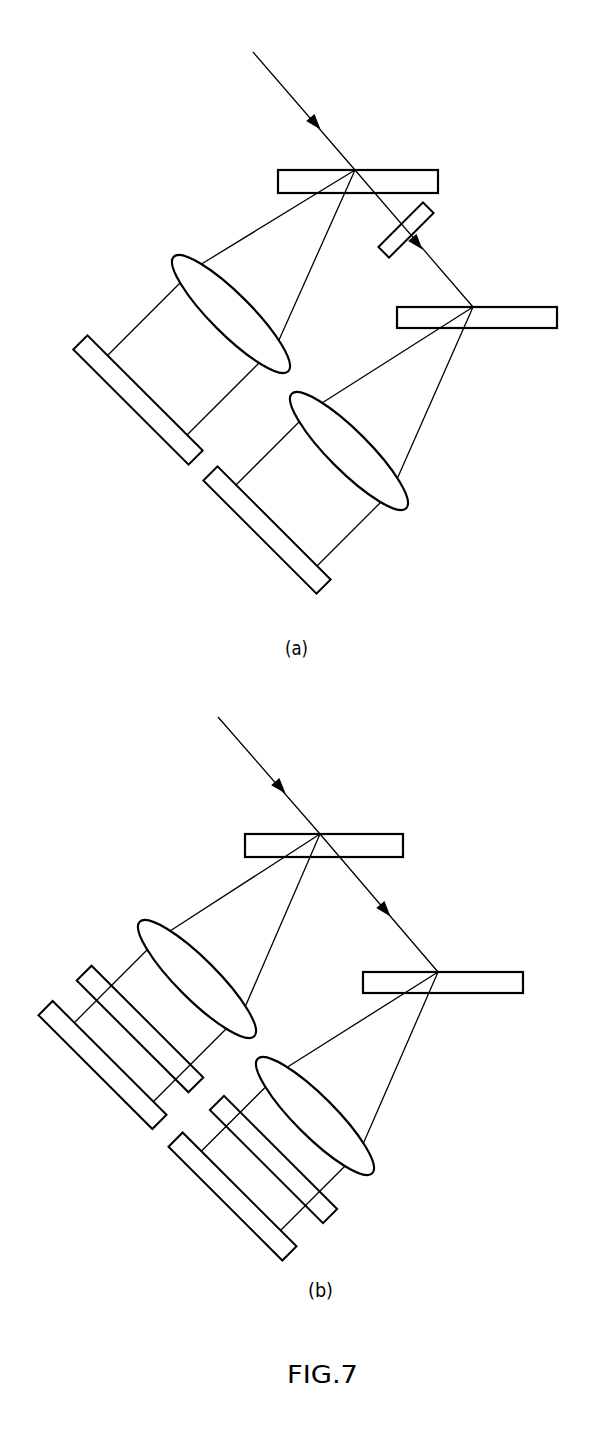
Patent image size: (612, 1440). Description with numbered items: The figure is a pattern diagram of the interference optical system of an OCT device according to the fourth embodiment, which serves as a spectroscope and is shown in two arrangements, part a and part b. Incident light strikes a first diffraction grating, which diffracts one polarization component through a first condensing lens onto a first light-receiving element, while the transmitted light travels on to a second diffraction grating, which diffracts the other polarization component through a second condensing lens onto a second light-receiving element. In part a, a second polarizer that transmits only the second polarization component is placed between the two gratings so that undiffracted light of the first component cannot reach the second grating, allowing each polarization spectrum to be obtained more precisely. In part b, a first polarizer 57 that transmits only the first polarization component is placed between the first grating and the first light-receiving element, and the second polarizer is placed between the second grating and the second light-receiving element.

The first polarizer 57 is at (85, 970).